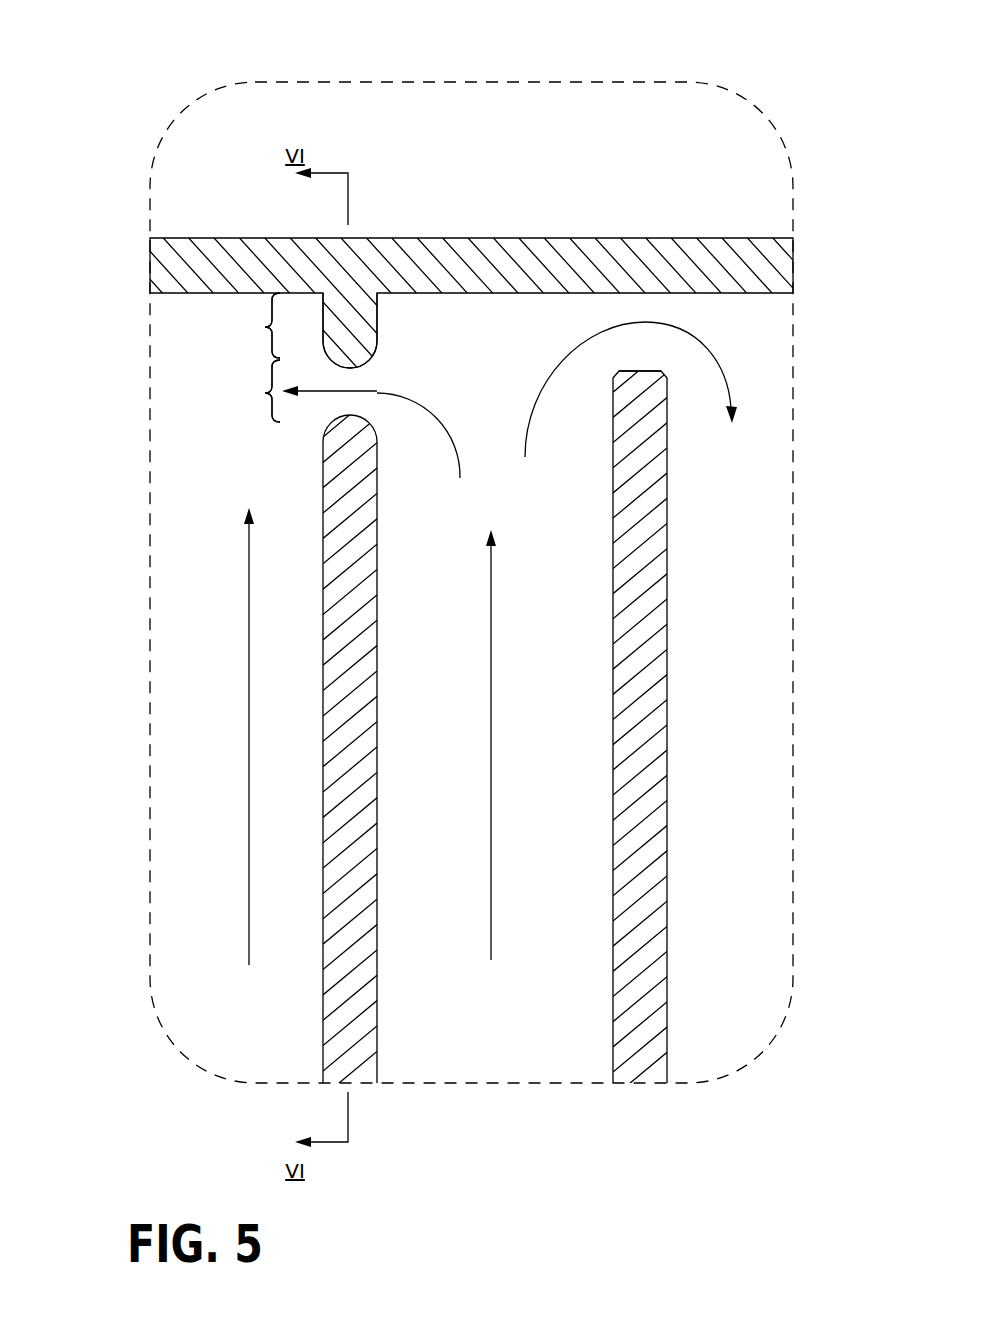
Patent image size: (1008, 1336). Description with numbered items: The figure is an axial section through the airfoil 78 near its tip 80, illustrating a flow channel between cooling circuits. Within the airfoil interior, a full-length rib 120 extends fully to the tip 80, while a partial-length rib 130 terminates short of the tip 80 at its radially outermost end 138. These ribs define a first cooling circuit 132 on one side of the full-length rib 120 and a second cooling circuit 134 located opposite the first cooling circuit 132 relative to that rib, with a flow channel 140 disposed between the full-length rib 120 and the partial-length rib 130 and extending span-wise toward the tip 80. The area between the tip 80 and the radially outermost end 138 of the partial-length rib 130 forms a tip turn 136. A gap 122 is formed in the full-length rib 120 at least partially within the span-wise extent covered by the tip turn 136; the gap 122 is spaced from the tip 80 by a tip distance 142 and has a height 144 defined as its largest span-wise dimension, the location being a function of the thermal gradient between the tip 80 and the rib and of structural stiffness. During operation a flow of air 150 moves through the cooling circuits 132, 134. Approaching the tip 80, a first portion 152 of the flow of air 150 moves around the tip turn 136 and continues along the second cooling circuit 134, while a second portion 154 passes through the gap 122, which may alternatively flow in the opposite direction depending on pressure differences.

The airfoil 78 is at (718, 190).
The tip 80 is at (248, 238).
The full-length rib 120 is at (323, 975).
The gap 122 is at (377, 378).
The partial-length rib 130 is at (613, 988).
The first cooling circuit 132 is at (192, 390).
The second cooling circuit 134 is at (477, 356).
The tip turn 136 is at (643, 286).
The radially outermost end 138 is at (642, 368).
The flow channel 140 is at (437, 964).
The tip distance 142 is at (246, 325).
The height 144 is at (294, 391).
The flow of air 150 is at (249, 634).
The first portion 152 is at (602, 330).
The second portion 154 is at (440, 430).